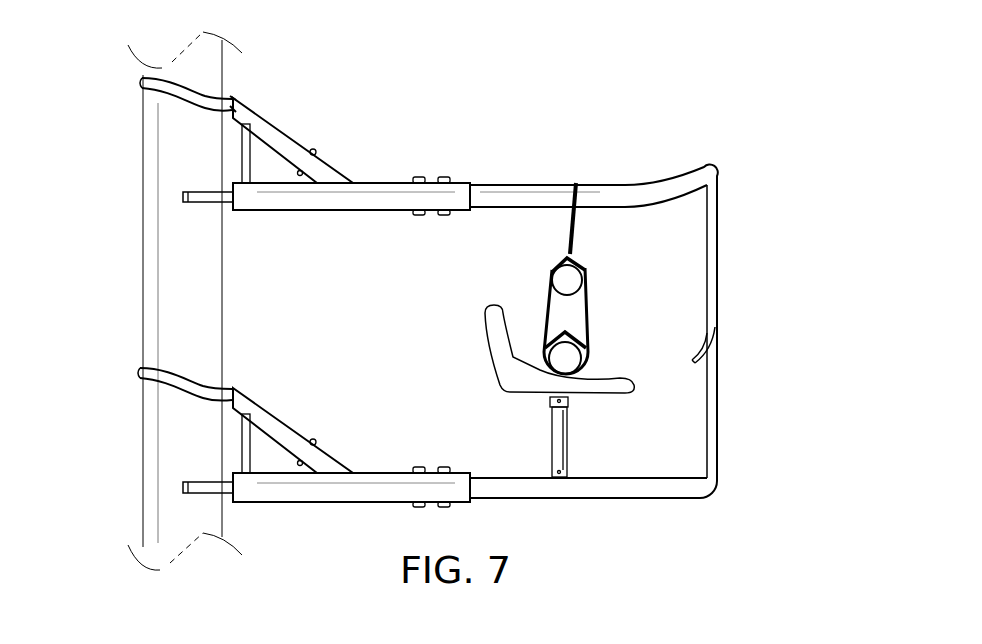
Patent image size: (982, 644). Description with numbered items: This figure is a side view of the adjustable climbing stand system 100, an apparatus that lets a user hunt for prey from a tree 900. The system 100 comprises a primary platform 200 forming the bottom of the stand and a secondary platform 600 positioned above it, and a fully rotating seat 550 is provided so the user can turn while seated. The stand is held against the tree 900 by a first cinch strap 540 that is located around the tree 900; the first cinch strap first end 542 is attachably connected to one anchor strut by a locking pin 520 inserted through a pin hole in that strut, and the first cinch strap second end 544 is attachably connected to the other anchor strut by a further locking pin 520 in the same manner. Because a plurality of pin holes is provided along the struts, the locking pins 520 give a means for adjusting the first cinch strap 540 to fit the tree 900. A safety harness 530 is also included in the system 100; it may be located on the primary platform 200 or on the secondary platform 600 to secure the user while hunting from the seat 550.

The adjustable climbing stand system 100 is at (710, 102).
The primary platform 200 is at (667, 497).
The locking pin 520 is at (318, 150).
The safety harness 530 is at (595, 273).
The first cinch strap 540 is at (143, 89).
The first cinch strap first end 542 is at (229, 107).
The first cinch strap second end 544 is at (229, 97).
The fully rotating seat 550 is at (603, 383).
The secondary platform 600 is at (630, 192).
The tree 900 is at (148, 260).